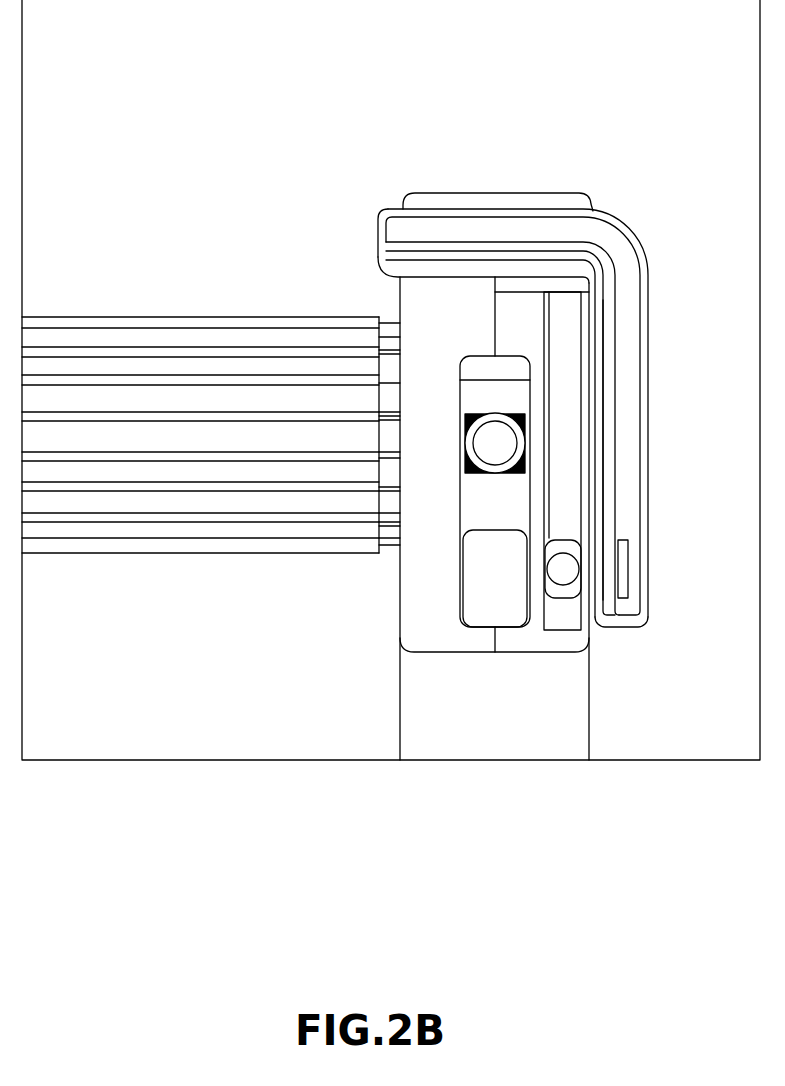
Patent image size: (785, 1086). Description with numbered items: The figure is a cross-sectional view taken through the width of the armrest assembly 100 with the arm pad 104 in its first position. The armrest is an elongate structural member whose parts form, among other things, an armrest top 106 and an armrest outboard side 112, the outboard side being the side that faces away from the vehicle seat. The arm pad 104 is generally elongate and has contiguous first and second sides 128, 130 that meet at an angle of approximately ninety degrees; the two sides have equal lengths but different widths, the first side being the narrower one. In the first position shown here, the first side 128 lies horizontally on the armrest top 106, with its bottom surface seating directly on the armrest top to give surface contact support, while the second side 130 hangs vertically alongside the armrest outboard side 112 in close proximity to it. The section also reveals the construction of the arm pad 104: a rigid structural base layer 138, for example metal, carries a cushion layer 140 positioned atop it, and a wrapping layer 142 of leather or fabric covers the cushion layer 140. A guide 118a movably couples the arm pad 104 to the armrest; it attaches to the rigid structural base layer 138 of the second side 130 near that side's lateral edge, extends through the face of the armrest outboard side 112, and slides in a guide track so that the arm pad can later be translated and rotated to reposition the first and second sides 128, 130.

The armrest assembly 100 is at (562, 110).
The arm pad 104 is at (621, 222).
The armrest top 106 is at (428, 284).
The armrest outboard side 112 is at (598, 633).
The first guide 118a is at (623, 570).
The first side 128 is at (430, 207).
The second side 130 is at (650, 320).
The rigid structural base layer 138 is at (608, 428).
The cushion layer 140 is at (627, 387).
The wrapping layer 142 is at (642, 287).